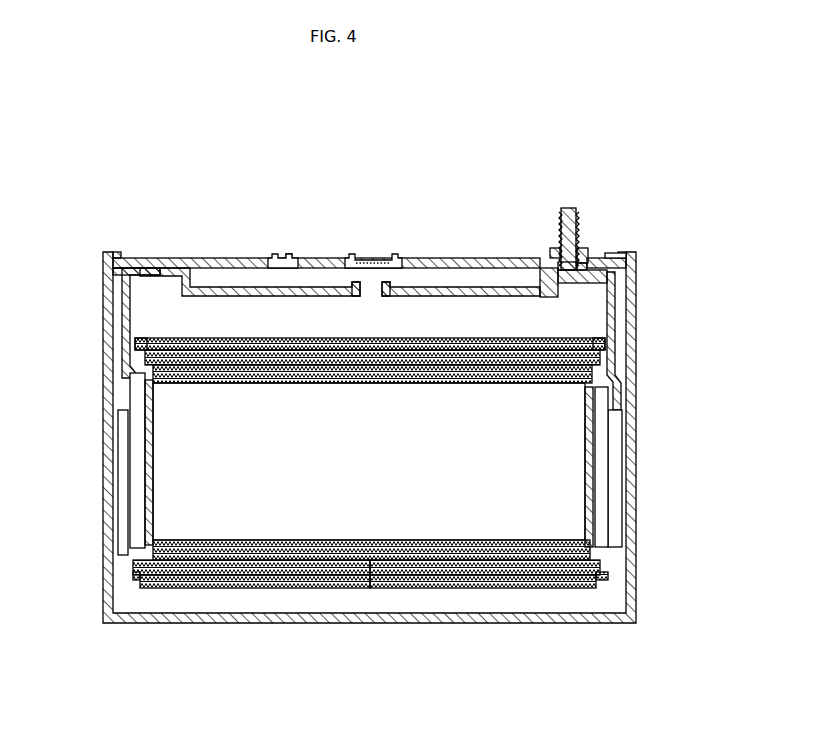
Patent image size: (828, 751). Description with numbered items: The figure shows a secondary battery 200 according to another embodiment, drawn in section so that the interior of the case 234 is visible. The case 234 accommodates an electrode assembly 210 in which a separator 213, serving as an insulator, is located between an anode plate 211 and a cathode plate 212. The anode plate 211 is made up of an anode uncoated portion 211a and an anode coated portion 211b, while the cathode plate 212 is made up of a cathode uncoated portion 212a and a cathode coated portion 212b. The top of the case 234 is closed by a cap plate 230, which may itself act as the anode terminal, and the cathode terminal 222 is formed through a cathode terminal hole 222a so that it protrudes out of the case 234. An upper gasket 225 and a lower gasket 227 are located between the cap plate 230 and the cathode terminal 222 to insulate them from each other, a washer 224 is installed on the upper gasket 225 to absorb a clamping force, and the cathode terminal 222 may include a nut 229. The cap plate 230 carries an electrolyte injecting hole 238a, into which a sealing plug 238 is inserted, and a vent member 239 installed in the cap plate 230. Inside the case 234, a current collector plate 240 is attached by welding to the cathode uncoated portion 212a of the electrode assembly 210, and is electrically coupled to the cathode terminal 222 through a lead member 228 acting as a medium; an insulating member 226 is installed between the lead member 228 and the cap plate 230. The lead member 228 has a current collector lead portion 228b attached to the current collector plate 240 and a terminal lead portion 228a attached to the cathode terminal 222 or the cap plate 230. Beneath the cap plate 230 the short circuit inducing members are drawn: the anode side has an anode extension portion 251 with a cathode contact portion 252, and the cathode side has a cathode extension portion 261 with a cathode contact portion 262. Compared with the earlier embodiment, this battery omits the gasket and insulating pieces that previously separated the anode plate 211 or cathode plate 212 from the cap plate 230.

The secondary battery 200 is at (393, 133).
The electrode assembly 210 is at (376, 525).
The anode plate 211 is at (241, 634).
The anode uncoated portion 211a is at (136, 580).
The anode coated portion 211b is at (178, 577).
The cathode plate 212 is at (505, 636).
The cathode uncoated portion 212a is at (607, 580).
The cathode coated portion 212b is at (556, 576).
The separator 213 is at (336, 575).
The cathode terminal 222 is at (569, 208).
The cathode terminal hole 222a is at (558, 248).
The washer 224 is at (553, 250).
The upper gasket 225 is at (589, 258).
The insulating member 226 is at (636, 266).
The lower gasket 227 is at (545, 268).
The lead member 228 is at (123, 302).
The terminal lead portion 228a is at (160, 275).
The current collector lead portion 228b is at (140, 344).
The nut 229 is at (586, 262).
The cap plate 230 is at (455, 258).
The case 234 is at (636, 430).
The sealing plug 238 is at (282, 257).
The electrolyte injecting hole 238a is at (291, 257).
The vent member 239 is at (365, 257).
The current collector plate 240 is at (118, 494).
The anode extension portion 251 is at (285, 296).
The cathode contact portion 252 is at (357, 284).
The cathode extension portion 261 is at (460, 296).
The cathode contact portion 262 is at (388, 284).